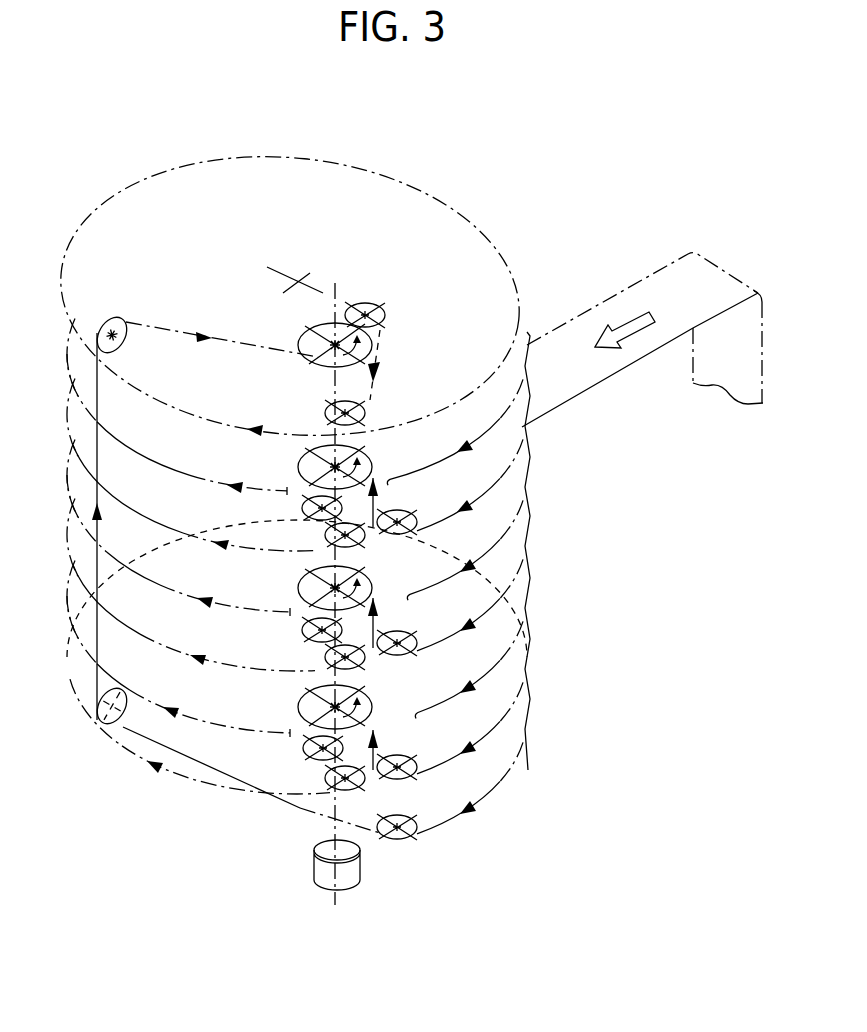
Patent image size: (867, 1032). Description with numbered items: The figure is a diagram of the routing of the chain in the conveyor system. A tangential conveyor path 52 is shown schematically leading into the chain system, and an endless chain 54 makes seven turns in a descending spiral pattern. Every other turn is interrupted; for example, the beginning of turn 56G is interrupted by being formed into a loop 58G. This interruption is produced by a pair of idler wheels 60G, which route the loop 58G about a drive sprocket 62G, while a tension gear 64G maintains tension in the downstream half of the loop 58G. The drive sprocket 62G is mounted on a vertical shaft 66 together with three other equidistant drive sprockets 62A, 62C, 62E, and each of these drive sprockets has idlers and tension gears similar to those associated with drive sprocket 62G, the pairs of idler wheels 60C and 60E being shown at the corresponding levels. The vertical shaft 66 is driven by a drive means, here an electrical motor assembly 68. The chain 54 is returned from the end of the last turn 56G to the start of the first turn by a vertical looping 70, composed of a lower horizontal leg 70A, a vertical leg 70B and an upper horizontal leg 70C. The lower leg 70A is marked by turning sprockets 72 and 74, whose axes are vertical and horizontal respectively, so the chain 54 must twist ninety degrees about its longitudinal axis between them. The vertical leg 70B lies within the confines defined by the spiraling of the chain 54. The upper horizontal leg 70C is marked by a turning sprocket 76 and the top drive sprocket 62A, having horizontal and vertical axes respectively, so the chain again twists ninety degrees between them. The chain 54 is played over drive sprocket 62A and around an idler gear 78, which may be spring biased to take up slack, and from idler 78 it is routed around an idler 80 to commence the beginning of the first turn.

The tangential conveyor path 52 is at (647, 281).
The endless chain 54 is at (481, 248).
The turn 56G is at (181, 778).
The loop 58G is at (375, 716).
The idler wheels 60C is at (398, 535).
The idler wheels 60E is at (398, 656).
The idler wheels 60G is at (380, 781).
The top drive sprocket 62A is at (317, 327).
The drive sprocket 62C is at (298, 462).
The drive sprocket 62E is at (298, 585).
The drive sprocket 62G is at (298, 704).
The tension gear 64G is at (303, 751).
The vertical shaft 66 is at (332, 283).
The electrical motor assembly 68 is at (358, 872).
The vertical looping 70 is at (97, 435).
The lower horizontal leg 70A is at (292, 803).
The vertical leg 70B is at (97, 590).
The upper horizontal leg 70C is at (183, 333).
The turning sprocket 72 is at (420, 830).
The turning sprocket 74 is at (118, 736).
The turning sprocket 76 is at (118, 320).
The idler gear 78 is at (380, 303).
The idler 80 is at (363, 412).